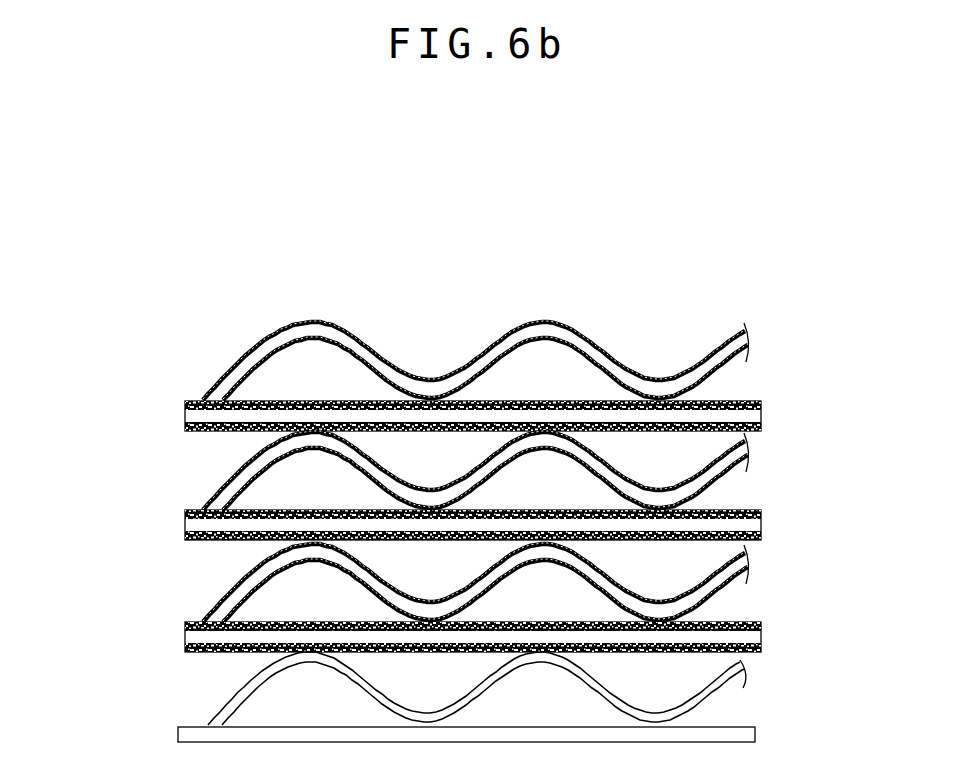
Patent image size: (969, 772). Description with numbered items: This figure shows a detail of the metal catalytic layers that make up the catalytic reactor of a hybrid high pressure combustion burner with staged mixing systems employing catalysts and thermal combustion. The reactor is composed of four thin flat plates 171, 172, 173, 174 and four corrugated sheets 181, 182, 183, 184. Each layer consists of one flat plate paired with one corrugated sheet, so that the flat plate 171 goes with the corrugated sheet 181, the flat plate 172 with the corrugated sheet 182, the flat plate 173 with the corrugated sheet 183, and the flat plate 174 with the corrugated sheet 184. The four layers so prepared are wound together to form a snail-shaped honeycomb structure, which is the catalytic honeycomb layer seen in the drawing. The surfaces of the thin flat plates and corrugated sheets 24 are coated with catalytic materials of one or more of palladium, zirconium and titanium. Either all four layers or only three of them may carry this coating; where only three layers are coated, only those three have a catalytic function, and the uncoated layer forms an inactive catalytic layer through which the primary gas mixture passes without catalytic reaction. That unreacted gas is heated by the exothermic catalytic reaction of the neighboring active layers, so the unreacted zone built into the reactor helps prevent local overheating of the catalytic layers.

The thin flat plate 171 is at (178, 728).
The thin flat plate 172 is at (185, 635).
The thin flat plate 173 is at (185, 522).
The thin flat plate 174 is at (185, 410).
The corrugated sheet 181 is at (262, 677).
The corrugated sheet 182 is at (272, 562).
The corrugated sheet 183 is at (272, 450).
The corrugated sheet 184 is at (272, 340).
The catalytic coating of thin flat plates and corrugated sheets 24 is at (740, 580).